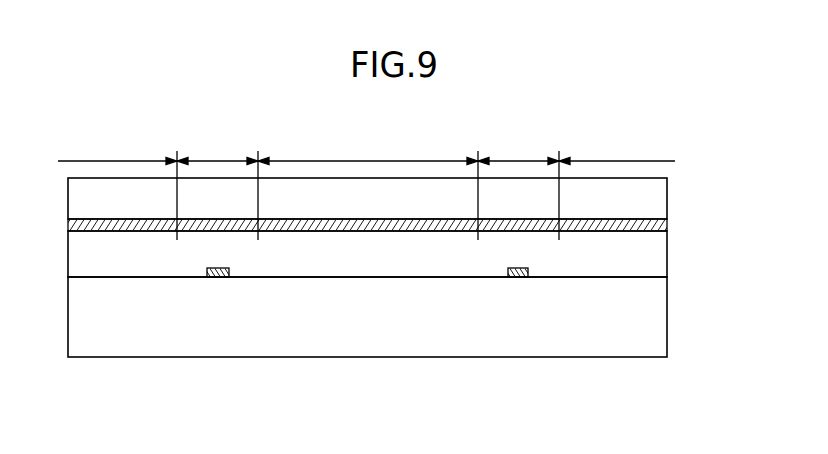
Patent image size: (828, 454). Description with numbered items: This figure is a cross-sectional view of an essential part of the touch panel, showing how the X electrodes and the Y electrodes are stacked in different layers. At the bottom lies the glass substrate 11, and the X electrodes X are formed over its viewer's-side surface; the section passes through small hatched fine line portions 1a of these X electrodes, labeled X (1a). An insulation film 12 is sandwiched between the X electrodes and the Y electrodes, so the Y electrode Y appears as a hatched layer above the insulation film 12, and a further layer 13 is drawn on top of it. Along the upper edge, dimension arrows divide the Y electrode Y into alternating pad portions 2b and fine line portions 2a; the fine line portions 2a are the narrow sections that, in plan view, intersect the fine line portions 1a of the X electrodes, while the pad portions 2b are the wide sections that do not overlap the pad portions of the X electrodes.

The glass substrate 11 is at (647, 326).
The insulation film 12 is at (651, 270).
The second layer 13 is at (653, 201).
The Y electrode Y is at (657, 228).
The X electrode X is at (367, 336).
The fine line portion 1a is at (213, 277).
The fine line portion 2a is at (368, 149).
The pad portion 2b is at (366, 149).